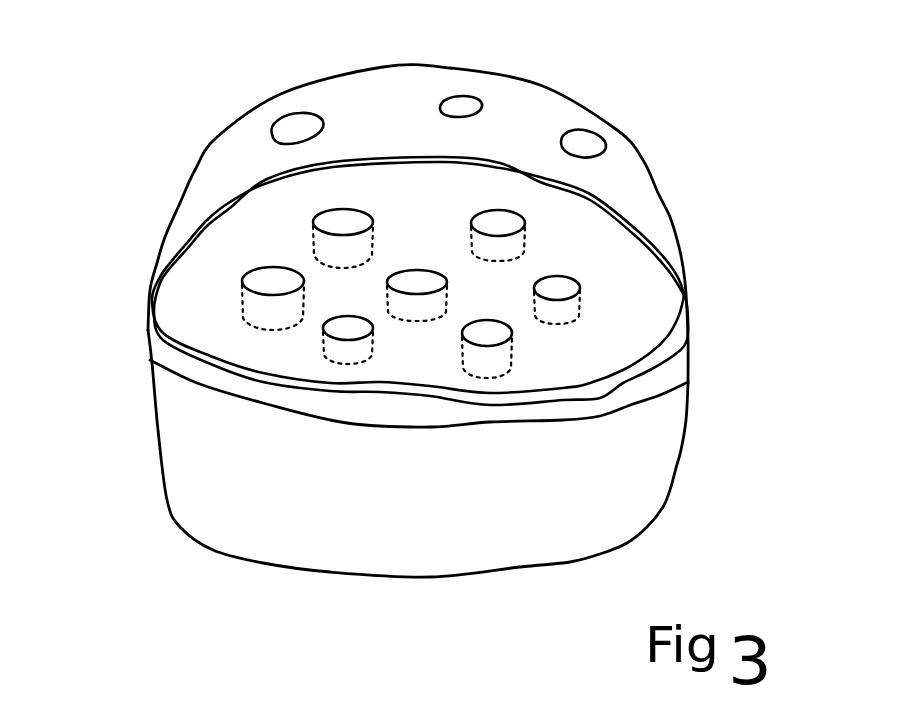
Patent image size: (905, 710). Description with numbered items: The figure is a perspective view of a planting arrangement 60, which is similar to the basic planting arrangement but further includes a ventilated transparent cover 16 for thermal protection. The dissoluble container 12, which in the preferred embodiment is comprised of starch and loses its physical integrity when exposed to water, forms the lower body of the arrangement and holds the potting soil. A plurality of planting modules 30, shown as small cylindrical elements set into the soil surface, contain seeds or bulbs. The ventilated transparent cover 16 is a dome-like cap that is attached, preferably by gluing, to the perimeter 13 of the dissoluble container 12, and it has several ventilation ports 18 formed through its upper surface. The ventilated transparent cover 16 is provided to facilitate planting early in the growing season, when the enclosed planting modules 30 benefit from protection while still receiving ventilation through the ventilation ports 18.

The planting arrangement 60 is at (115, 71).
The ventilated transparent cover 16 is at (673, 213).
The ventilation ports 18 is at (583, 144).
The perimeter 13 is at (667, 373).
The dissoluble container 12 is at (690, 417).
The planting modules 30 is at (270, 277).